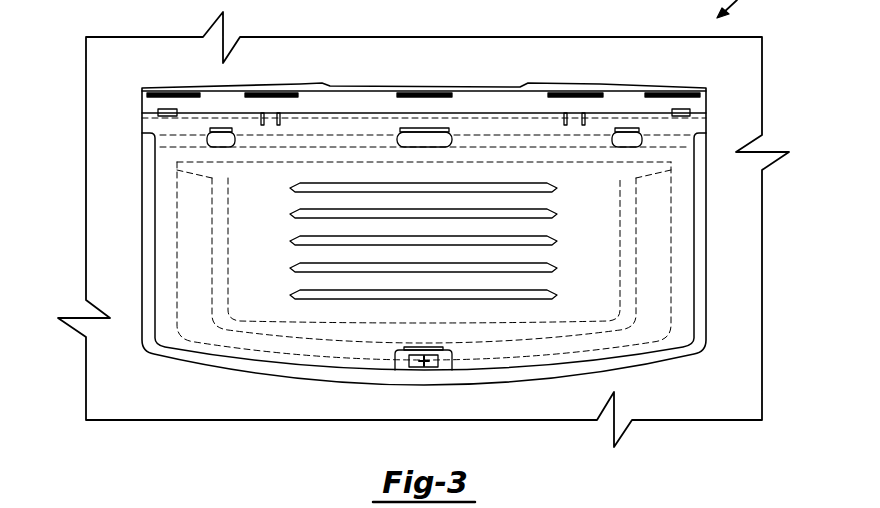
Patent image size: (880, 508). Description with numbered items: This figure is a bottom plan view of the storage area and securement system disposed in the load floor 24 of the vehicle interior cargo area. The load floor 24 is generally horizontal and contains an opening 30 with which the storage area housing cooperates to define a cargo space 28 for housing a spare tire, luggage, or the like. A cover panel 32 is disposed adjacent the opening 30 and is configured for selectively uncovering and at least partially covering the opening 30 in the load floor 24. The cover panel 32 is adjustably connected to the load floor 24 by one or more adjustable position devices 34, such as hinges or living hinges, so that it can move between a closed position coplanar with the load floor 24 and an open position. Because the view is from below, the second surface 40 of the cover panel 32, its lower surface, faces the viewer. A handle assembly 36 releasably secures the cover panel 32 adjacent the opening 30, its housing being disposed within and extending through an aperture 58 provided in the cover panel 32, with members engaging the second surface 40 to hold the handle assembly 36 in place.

The load floor 24 is at (86, 258).
The cargo space 28 is at (557, 268).
The opening 30 is at (142, 168).
The cover panel 32 is at (708, 304).
The adjustable position devices 34 is at (286, 90).
The handle assembly 36 is at (424, 368).
The second surface 40 is at (706, 228).
The aperture 58 is at (453, 358).